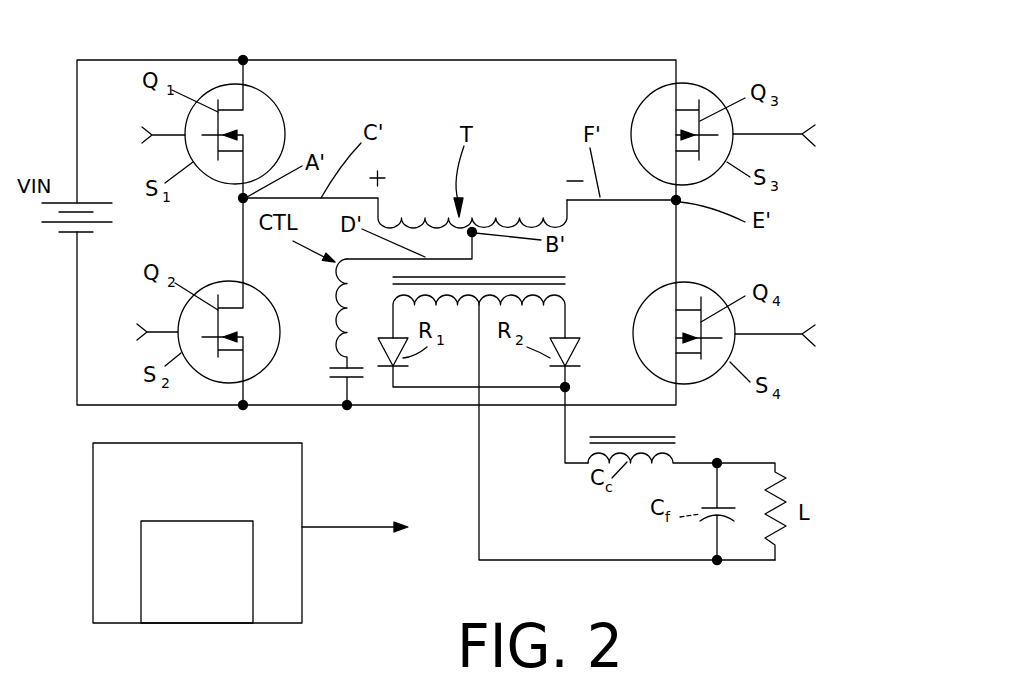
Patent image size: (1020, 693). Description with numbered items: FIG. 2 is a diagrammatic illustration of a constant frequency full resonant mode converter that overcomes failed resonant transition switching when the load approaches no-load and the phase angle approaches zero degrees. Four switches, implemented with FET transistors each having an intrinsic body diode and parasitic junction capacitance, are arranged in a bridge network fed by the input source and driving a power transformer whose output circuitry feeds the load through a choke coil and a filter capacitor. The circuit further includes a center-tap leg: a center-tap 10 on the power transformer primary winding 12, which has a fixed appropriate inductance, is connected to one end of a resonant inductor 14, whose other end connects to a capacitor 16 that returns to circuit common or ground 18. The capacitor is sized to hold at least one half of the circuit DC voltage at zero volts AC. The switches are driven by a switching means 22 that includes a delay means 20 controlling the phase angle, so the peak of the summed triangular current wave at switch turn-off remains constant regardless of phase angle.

The center-tap 10 is at (475, 236).
The primary winding 12 is at (573, 219).
The resonant inductor 14 is at (335, 302).
The capacitor 16 is at (330, 371).
The circuit common or ground 18 is at (349, 410).
The delay means 20 is at (207, 610).
The switching means 22 is at (57, 530).